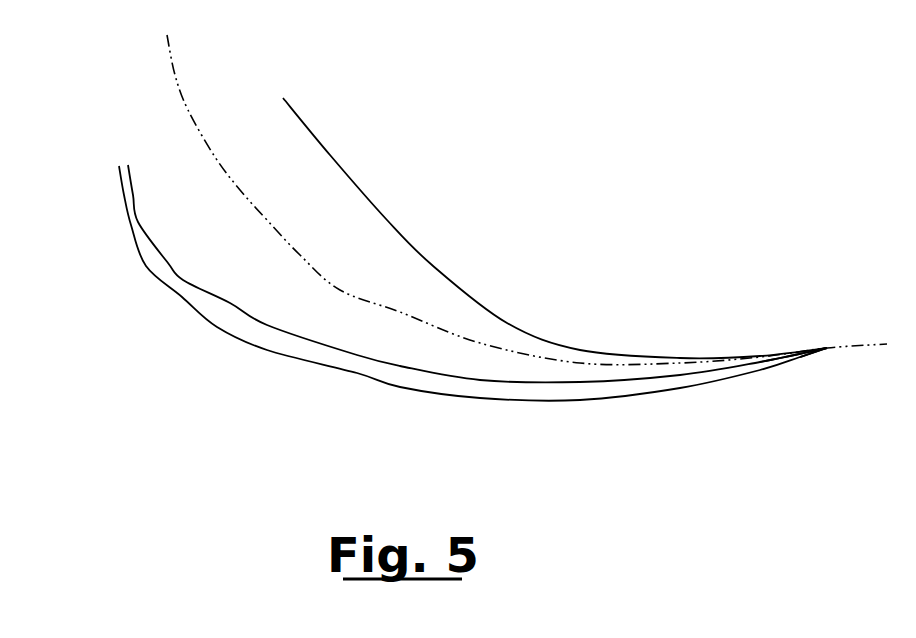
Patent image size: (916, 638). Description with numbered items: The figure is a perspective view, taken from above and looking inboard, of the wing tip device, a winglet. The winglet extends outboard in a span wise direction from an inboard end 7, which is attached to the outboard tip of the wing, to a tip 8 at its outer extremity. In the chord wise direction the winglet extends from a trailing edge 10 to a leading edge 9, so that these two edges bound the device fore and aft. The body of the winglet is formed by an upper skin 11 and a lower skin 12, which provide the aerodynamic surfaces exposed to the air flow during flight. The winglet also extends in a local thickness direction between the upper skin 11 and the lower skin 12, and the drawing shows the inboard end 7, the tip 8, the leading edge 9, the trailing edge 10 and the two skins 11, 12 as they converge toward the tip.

The inboard end 7 is at (242, 133).
The tip 8 is at (827, 347).
The leading edge 9 is at (358, 357).
The trailing edge 10 is at (432, 265).
The upper skin 11 is at (373, 225).
The lower skin 12 is at (207, 323).